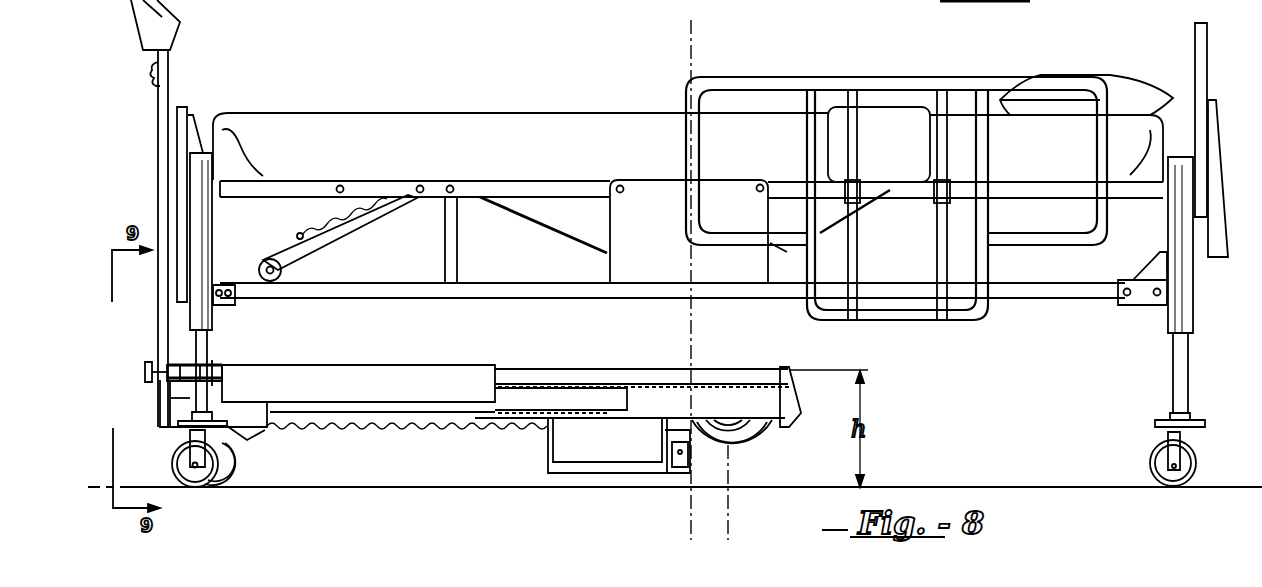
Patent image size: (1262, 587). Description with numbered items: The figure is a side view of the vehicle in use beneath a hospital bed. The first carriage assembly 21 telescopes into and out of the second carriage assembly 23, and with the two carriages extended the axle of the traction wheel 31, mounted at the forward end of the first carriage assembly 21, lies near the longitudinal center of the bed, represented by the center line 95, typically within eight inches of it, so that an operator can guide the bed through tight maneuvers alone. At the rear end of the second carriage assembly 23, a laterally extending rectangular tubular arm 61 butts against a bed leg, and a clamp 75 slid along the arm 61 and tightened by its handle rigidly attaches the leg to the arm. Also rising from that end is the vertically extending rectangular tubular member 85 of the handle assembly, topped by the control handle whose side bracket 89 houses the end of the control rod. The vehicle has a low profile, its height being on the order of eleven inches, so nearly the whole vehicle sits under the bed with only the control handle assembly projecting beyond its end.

The first carriage assembly 21 is at (563, 367).
The second carriage assembly 23 is at (363, 365).
The traction wheel 31 is at (765, 452).
The rectangular tubular arm 61 is at (195, 363).
The clamp 75 is at (178, 410).
The vertically extending rectangular tubular member 85 is at (161, 149).
The side bracket 89 is at (168, 20).
The center line 95 is at (691, 32).